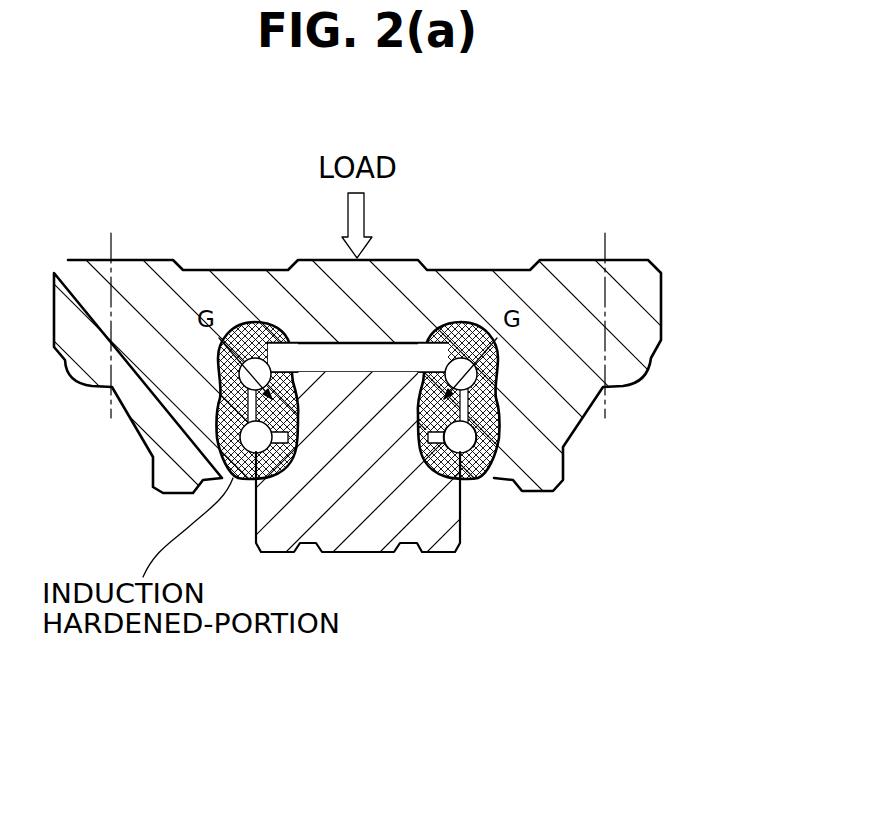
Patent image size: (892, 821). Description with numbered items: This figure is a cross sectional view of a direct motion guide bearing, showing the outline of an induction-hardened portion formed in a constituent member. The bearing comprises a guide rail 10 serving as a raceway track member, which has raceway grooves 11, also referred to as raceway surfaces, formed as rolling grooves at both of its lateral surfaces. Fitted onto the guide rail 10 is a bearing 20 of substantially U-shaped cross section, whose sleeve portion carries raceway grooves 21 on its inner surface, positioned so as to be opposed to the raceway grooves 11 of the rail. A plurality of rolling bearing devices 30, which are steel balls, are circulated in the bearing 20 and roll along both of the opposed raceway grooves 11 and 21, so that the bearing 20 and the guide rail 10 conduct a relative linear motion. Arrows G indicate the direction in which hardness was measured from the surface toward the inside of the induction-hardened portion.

The guide rail 10 is at (370, 526).
The rolling groove of guide rail 11 is at (464, 456).
The slider 20 is at (640, 300).
The rolling groove of slider 21 is at (466, 458).
The ball retainer 30 is at (500, 419).